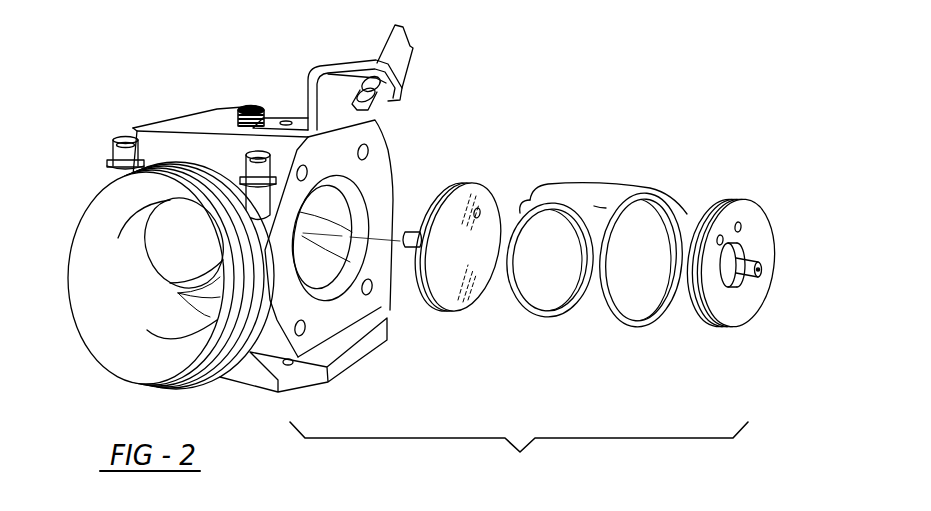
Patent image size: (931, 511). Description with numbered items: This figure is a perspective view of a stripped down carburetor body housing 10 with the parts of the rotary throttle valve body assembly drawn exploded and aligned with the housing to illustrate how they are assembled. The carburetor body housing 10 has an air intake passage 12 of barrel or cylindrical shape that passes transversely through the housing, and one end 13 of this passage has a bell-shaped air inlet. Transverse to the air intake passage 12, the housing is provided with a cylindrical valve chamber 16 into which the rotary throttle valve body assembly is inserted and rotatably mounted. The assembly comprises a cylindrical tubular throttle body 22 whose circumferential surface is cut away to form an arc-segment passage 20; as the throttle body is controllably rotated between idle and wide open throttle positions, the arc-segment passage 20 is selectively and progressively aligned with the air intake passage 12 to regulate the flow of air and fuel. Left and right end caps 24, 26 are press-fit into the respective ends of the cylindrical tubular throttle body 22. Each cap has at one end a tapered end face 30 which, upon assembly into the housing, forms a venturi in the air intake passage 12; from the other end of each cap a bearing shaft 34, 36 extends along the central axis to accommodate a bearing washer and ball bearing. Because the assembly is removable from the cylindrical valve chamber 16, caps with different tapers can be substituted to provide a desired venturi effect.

The carburetor body housing 10 is at (202, 112).
The air intake passage 12 is at (137, 277).
The one end 13 is at (178, 388).
The cylindrical valve chamber 16 is at (394, 180).
The arc-segment passage 20 is at (564, 205).
The cylindrical tubular throttle body 22 is at (612, 230).
The left end cap 24 is at (457, 287).
The right end cap 26 is at (743, 288).
The tapered end face 30 is at (457, 247).
The bearing shaft 34 is at (417, 230).
The bearing shaft 36 is at (756, 258).